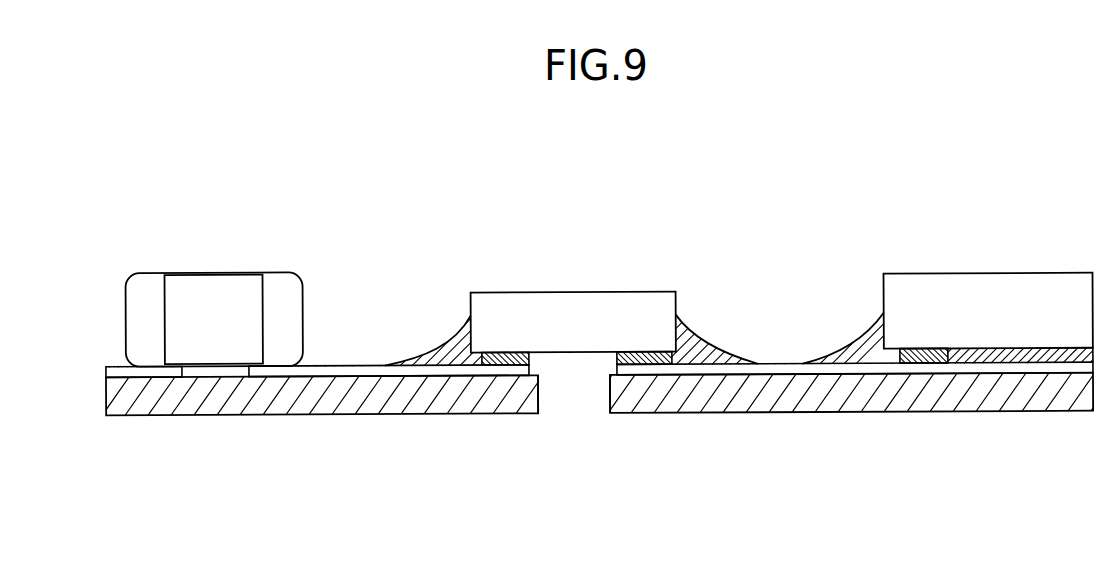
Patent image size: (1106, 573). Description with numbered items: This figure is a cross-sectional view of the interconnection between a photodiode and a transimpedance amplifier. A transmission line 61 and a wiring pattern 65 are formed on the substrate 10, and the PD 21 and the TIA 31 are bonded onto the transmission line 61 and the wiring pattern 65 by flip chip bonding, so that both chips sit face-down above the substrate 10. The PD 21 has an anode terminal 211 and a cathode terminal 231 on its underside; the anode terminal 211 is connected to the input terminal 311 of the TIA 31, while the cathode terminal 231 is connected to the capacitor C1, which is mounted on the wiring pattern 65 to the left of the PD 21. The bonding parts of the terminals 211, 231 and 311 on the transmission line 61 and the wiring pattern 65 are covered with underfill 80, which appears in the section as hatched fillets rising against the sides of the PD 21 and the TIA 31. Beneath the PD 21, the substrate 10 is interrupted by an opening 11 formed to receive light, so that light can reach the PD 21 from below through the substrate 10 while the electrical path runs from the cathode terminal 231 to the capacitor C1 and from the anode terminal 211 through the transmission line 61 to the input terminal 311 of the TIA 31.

The substrate 10 is at (157, 405).
The slot / through-hole in substrate 11 is at (572, 390).
The capacitor C1 is at (211, 283).
The wiring pattern 65 is at (352, 366).
The PD 21 is at (576, 310).
The cathode terminal 231 is at (511, 358).
The anode terminal 211 is at (636, 358).
The underfill 80 is at (712, 343).
The transmission line 61 is at (785, 366).
The TIA 31 is at (998, 290).
The input terminal 311 is at (908, 355).